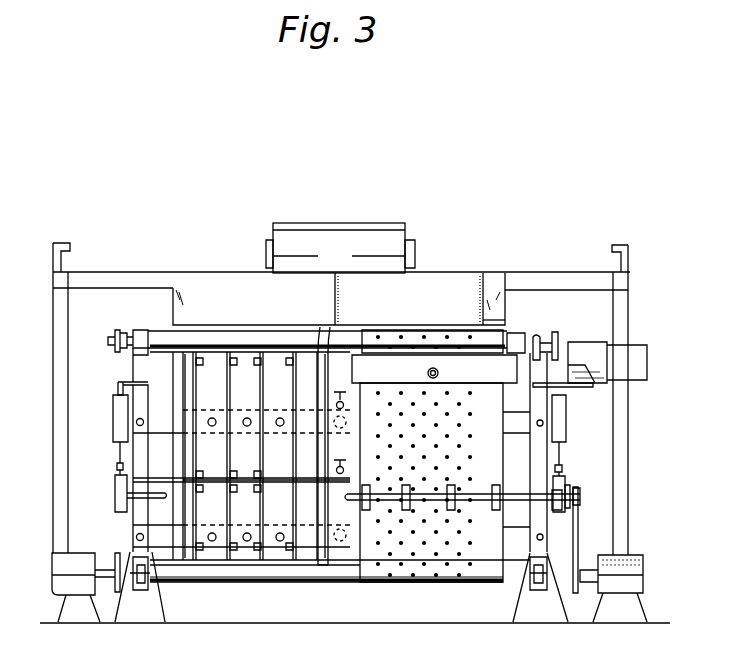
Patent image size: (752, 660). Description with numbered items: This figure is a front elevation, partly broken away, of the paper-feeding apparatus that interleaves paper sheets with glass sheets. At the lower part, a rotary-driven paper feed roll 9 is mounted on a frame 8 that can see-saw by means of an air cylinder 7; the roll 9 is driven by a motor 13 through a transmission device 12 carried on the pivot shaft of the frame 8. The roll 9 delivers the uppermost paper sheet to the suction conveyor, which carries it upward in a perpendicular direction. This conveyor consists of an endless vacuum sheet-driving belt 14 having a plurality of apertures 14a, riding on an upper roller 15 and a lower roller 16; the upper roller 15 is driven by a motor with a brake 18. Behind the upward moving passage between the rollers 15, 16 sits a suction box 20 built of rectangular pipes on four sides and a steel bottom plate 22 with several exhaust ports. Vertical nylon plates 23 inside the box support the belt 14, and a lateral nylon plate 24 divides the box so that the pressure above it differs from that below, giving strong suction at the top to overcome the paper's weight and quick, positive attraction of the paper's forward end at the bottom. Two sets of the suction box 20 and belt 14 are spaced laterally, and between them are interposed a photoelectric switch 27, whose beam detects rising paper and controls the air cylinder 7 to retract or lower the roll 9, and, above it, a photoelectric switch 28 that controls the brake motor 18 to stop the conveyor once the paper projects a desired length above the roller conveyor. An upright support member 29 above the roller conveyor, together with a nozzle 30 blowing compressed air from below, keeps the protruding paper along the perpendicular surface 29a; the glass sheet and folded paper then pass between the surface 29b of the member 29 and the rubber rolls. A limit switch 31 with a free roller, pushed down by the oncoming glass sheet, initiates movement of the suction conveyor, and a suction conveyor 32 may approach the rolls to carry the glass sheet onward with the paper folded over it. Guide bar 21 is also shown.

The air cylinder 7 is at (113, 412).
The frame 8 is at (122, 513).
The paper feed roll 9 is at (490, 484).
The transmission device 12 is at (578, 540).
The motor 13 is at (643, 575).
The endless vacuum sheet-driving belt 14 is at (375, 347).
The apertures 14a is at (447, 337).
The upper roller 15 is at (168, 335).
The lower roller 16 is at (350, 573).
The motor with a brake 18 is at (587, 350).
The suction box 20 is at (243, 352).
The guide bar 21 is at (313, 445).
The steel bottom plate 22 is at (292, 396).
The nylon plates 23 is at (262, 436).
The nylon plate 24 is at (243, 483).
The photoelectric switch 27 is at (335, 470).
The photoelectric switch 28 is at (327, 327).
The upright support member 29 is at (487, 285).
The perpendicular surface 29a is at (445, 282).
The surface 29b is at (480, 330).
The nozzle 30 is at (420, 384).
The limit switch 31 is at (342, 337).
The suction conveyor 32 is at (350, 262).